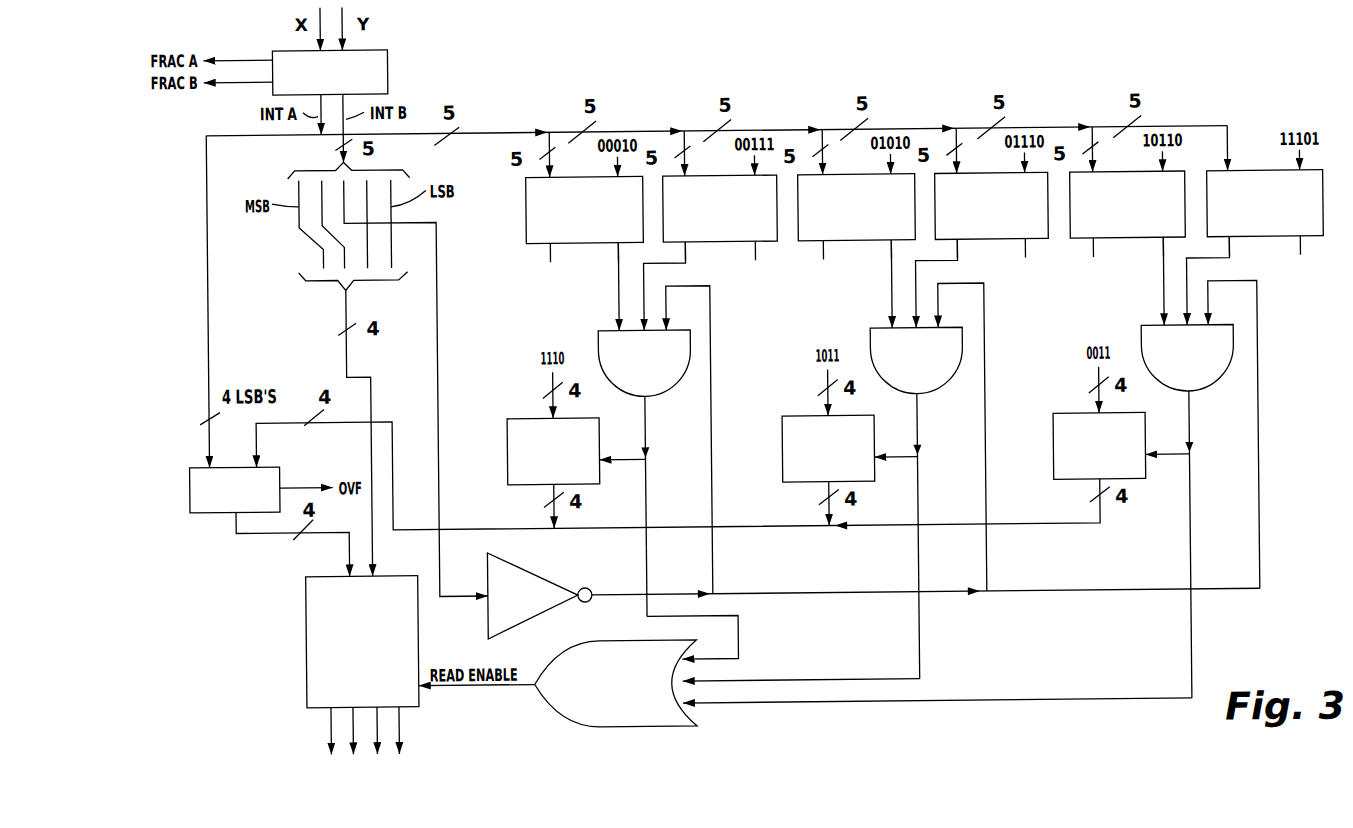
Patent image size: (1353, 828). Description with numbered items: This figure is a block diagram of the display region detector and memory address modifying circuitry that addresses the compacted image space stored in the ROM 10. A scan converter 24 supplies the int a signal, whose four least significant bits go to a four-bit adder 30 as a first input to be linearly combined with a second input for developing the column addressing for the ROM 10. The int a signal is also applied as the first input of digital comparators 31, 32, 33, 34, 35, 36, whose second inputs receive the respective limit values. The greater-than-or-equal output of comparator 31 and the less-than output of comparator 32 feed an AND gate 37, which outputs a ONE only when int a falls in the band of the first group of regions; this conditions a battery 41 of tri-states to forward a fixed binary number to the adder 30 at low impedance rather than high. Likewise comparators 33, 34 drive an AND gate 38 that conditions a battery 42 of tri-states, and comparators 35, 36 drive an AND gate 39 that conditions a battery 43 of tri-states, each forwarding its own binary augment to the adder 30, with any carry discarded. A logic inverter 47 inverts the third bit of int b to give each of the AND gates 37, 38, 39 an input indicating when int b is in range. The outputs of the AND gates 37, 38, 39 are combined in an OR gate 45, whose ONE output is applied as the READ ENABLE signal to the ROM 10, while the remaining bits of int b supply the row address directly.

The ROM 10 is at (302, 620).
The scan converter 24 is at (389, 68).
The four-bit adder 30 is at (210, 509).
The digital comparator 31 is at (526, 218).
The digital comparator 32 is at (768, 244).
The digital comparator 33 is at (808, 244).
The digital comparator 34 is at (1040, 244).
The digital comparator 35 is at (1082, 244).
The digital comparator 36 is at (1315, 244).
The AND gate 37 is at (679, 396).
The AND gate 38 is at (951, 392).
The AND gate 39 is at (1221, 392).
The battery of tri-states 41 is at (505, 440).
The battery of tri-states 42 is at (780, 455).
The battery of tri-states 43 is at (1051, 440).
The OR gate 45 is at (541, 705).
The logic inverter 47 is at (536, 574).